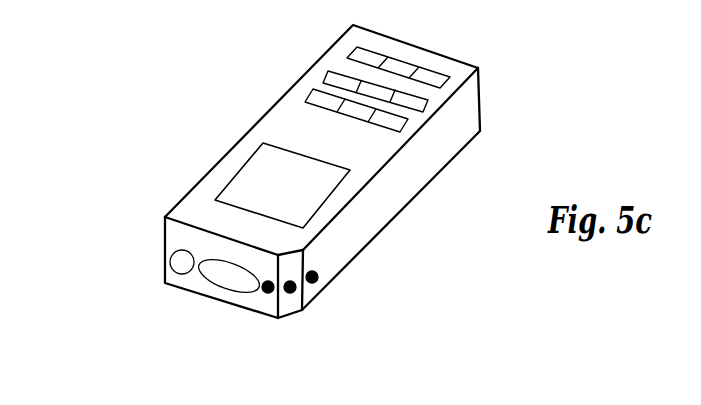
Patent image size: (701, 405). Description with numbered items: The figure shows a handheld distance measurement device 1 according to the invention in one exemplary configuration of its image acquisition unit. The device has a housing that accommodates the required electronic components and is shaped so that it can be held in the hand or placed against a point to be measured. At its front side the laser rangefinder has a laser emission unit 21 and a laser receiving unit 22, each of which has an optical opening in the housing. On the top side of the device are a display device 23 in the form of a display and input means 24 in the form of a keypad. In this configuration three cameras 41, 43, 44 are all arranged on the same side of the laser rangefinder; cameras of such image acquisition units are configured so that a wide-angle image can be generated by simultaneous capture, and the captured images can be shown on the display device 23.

The handheld distance measurement device 1 is at (498, 63).
The laser emission unit 21 is at (176, 259).
The laser receiving unit 22 is at (220, 273).
The display device 23 is at (240, 173).
The input means 24 is at (340, 72).
The camera 41 is at (268, 287).
The camera 43 is at (290, 287).
The camera 44 is at (312, 277).